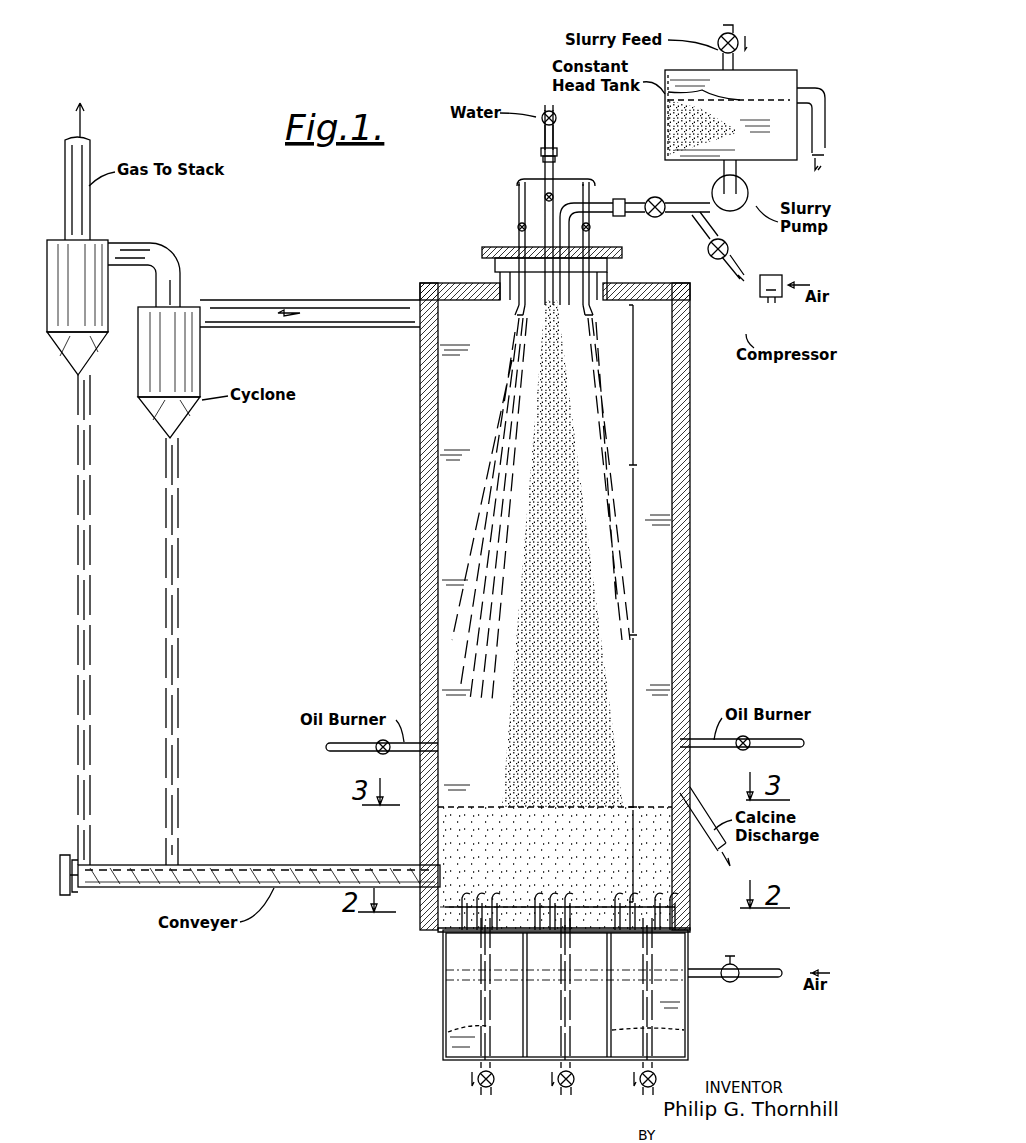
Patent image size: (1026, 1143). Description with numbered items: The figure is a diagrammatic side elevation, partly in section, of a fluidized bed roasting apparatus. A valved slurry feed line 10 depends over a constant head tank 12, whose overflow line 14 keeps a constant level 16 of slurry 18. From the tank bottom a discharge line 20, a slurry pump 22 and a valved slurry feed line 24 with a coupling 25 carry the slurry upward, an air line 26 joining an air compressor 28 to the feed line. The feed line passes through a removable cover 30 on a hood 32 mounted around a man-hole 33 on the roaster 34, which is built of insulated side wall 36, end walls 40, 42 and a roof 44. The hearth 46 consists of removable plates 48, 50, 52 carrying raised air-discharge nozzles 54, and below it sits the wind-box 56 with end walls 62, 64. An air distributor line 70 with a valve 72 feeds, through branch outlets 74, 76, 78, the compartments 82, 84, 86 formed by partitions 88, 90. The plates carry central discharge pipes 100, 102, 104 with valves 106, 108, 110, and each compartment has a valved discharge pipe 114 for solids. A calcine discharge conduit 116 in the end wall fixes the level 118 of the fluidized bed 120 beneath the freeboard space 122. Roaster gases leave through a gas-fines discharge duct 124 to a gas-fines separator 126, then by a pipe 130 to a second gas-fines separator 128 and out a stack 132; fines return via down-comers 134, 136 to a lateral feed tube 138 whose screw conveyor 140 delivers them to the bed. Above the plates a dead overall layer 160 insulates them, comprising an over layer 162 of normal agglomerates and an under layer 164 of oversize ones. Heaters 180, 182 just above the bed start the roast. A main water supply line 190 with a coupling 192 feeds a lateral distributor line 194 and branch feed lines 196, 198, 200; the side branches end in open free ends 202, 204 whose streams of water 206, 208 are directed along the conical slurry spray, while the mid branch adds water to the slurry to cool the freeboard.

The valved slurry feed line 10 is at (740, 40).
The constant head tank 12 is at (786, 78).
The overflow line 14 is at (810, 98).
The constant level 16 is at (692, 98).
The slurry 18 is at (732, 108).
The discharge line 20 is at (742, 178).
The slurry pump 22 is at (747, 200).
The valved slurry feed line 24 is at (698, 192).
The coupling 25 is at (619, 198).
The air line 26 is at (717, 237).
The air compressor 28 is at (787, 276).
The removable cover 30 is at (500, 248).
The hood 32 is at (496, 272).
The man-hole 33 is at (602, 270).
The roaster 34 is at (636, 278).
The side wall 36 is at (555, 567).
The end wall 40 is at (692, 509).
The end wall 42 is at (428, 512).
The roof 44 is at (448, 286).
The hearth 46 is at (672, 952).
The removable plate 48 is at (620, 956).
The removable plate 50 is at (542, 956).
The removable plate 52 is at (462, 956).
The air-discharge nozzles 54 is at (487, 898).
The wind-box 56 is at (707, 1025).
The end wall 62 is at (688, 1007).
The end wall 64 is at (444, 996).
The air distributor line 70 is at (755, 970).
The valve 72 is at (734, 960).
The branch outlet 74 is at (644, 986).
The branch outlet 76 is at (570, 986).
The branch outlet 78 is at (490, 986).
The compartment 82 is at (625, 1011).
The compartment 84 is at (543, 1011).
The compartment 86 is at (463, 1011).
The partition 88 is at (598, 1028).
The partition 90 is at (524, 1022).
The discharge pipe 100 is at (654, 942).
The discharge pipe 102 is at (564, 944).
The discharge pipe 104 is at (501, 993).
The valve 106 is at (656, 1080).
The valve 108 is at (574, 1080).
The valve 110 is at (494, 1080).
The valved discharge pipe 114 is at (570, 1024).
The calcine discharge conduit 116 is at (726, 802).
The level 118 is at (658, 805).
The fluidized bed 120 is at (555, 615).
The freeboard space 122 is at (563, 603).
The gas-fines discharge duct 124 is at (364, 300).
The gas-fines separator 126 is at (198, 376).
The second gas-fines separator 128 is at (100, 299).
The pipe 130 is at (179, 267).
The stack 132 is at (91, 216).
The down-comer 134 is at (181, 561).
The down-comer 136 is at (91, 534).
The lateral feed tube 138 is at (252, 862).
The screw conveyor 140 is at (298, 864).
The dead overall layer 160 is at (688, 924).
The over layer 162 is at (692, 905).
The under layer 164 is at (684, 906).
The heater 180 is at (787, 748).
The heater 182 is at (356, 756).
The main water supply line 190 is at (558, 116).
The coupling 192 is at (558, 154).
The lateral distributor line 194 is at (538, 179).
The branch feed line 196 is at (519, 197).
The branch feed line 198 is at (559, 210).
The branch feed line 200 is at (582, 182).
The open free end 202 is at (515, 312).
The open free end 204 is at (592, 312).
The stream of water 206 is at (510, 372).
The stream of water 208 is at (608, 370).